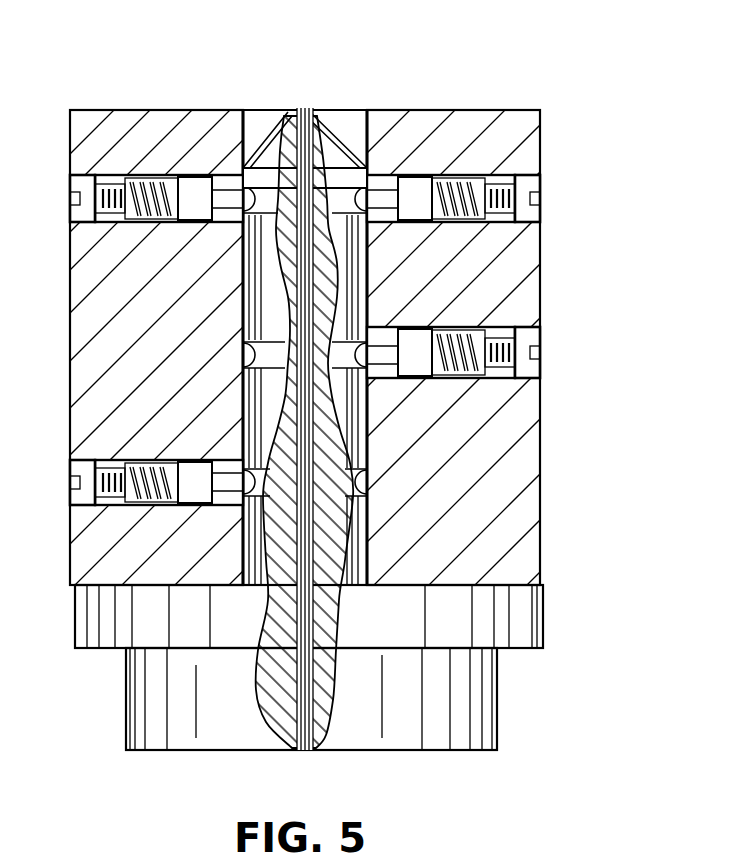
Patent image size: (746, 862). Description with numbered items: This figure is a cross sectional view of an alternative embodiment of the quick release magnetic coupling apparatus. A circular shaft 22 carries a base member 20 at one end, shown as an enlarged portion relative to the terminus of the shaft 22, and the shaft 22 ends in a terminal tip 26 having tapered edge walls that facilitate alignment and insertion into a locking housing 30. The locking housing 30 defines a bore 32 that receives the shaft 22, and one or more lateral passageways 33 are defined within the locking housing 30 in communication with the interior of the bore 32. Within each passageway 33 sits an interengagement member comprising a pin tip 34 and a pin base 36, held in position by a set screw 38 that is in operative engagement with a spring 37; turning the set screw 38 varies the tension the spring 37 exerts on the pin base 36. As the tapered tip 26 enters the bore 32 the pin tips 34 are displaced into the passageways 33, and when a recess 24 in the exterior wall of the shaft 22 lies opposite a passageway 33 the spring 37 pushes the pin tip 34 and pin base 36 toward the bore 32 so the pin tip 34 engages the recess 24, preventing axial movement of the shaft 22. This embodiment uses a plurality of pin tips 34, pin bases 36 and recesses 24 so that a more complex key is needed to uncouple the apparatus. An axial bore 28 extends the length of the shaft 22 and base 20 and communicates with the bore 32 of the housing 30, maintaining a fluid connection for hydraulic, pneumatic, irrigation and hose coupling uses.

The base member 20 is at (542, 617).
The shaft 22 is at (380, 545).
The recess 24 is at (240, 250).
The terminal tip 26 is at (347, 112).
The axial bore 28 is at (305, 112).
The locking housing 30 is at (543, 446).
The bore 32 is at (250, 112).
The lateral passageway 33 is at (147, 175).
The pin tip 34 is at (382, 200).
The pin base 36 is at (407, 190).
The spring 37 is at (486, 162).
The set screw 38 is at (540, 210).